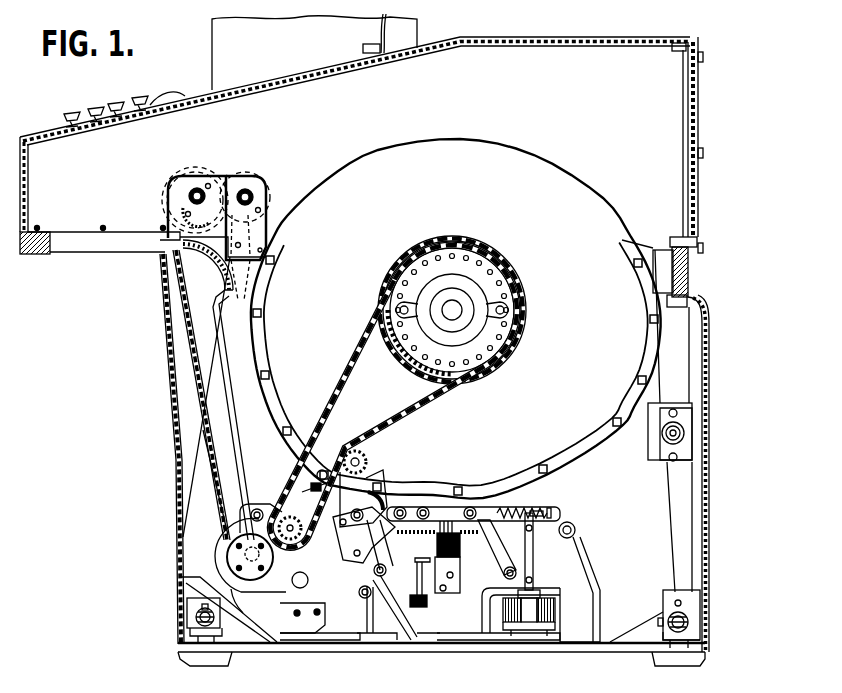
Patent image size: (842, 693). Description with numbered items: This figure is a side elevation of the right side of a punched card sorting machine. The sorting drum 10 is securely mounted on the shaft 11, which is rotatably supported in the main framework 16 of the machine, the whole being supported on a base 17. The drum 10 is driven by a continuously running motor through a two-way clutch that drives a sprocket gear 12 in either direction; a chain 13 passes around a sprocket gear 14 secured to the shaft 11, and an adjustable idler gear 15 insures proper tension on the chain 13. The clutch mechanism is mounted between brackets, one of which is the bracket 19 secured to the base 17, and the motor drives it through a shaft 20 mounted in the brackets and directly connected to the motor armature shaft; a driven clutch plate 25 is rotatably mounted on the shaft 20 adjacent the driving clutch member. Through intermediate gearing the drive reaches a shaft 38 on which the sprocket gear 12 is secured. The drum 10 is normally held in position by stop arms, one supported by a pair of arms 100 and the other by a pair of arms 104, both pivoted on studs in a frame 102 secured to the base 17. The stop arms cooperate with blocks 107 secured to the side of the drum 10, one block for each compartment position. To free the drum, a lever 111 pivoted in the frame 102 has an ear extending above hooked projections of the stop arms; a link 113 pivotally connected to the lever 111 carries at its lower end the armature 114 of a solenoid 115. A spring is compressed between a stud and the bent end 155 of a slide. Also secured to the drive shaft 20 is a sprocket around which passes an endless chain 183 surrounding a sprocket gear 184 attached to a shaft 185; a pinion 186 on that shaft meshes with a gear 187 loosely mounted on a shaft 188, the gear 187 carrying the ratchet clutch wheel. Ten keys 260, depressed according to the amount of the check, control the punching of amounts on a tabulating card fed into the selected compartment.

The sorting drum 10 is at (456, 319).
The shaft 11 is at (452, 308).
The sprocket gear 12 is at (292, 550).
The chain 13 is at (410, 418).
The sprocket gear 14 is at (400, 366).
The adjustable idler gear 15 is at (368, 465).
The framework 16 is at (200, 533).
The base 17 is at (380, 644).
The bracket 19 is at (270, 626).
The shaft 20 is at (250, 561).
The driven clutch plate 25 is at (218, 557).
The shaft 38 is at (300, 537).
The arms 100 is at (390, 548).
The frame 102 is at (578, 576).
The arms 104 is at (502, 560).
The blocks 107 is at (530, 477).
The lever 111 is at (572, 525).
The link 113 is at (534, 560).
The armature 114 is at (534, 578).
The solenoid 115 is at (563, 613).
The bent end 155 is at (545, 514).
The endless chain 183 is at (192, 358).
The sprocket gear 184 is at (178, 248).
The shaft 185 is at (190, 195).
The pinion 186 is at (180, 210).
The gear 187 is at (268, 193).
The shaft 188 is at (247, 195).
The keys 260 is at (138, 98).